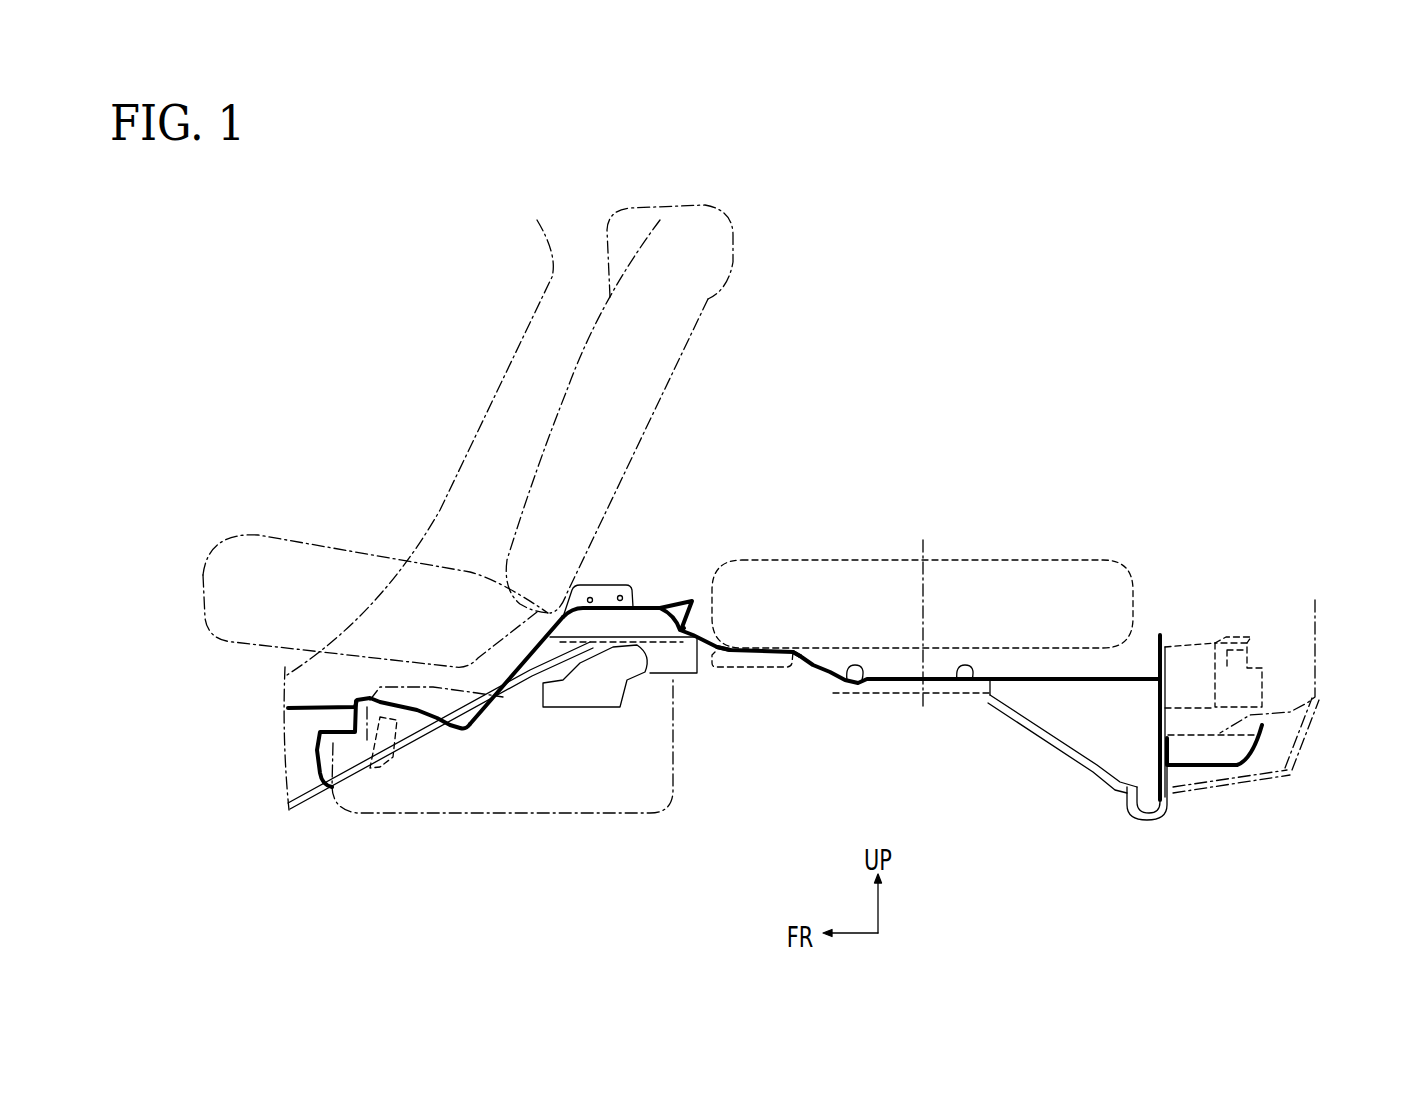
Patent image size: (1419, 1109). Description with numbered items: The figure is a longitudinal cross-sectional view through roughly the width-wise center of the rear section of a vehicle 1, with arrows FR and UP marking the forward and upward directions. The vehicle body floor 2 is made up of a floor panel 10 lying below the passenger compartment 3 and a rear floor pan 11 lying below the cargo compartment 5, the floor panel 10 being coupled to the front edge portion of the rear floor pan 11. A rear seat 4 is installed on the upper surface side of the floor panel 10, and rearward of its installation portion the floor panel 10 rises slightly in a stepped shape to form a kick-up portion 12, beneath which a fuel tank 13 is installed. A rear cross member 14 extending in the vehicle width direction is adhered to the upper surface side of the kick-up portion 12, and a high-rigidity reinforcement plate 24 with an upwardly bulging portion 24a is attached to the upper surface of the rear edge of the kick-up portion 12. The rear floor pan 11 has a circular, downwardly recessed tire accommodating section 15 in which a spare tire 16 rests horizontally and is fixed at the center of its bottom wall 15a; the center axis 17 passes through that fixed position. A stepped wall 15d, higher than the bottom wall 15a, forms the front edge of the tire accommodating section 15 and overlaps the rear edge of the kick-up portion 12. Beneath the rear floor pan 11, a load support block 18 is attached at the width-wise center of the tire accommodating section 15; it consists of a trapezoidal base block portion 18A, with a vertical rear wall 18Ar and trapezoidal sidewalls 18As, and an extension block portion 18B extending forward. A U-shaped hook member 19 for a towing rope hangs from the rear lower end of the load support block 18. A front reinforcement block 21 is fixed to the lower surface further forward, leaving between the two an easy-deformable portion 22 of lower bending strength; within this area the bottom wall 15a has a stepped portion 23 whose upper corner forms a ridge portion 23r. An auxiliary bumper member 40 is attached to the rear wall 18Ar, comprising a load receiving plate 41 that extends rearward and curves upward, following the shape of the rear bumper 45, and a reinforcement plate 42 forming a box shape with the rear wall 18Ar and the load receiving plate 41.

The vehicle 1 is at (999, 178).
The vehicle body floor 2 is at (286, 738).
The passenger compartment 3 is at (375, 483).
The rear seat 4 is at (510, 440).
The cargo compartment 5 is at (1026, 341).
The floor panel 10 is at (440, 783).
The rear floor pan 11 is at (991, 798).
The kick-up portion 12 is at (636, 590).
The fuel tank 13 is at (502, 808).
The rear cross member 14 is at (613, 528).
The tire accommodating section 15 is at (980, 750).
The bottom wall 15a is at (957, 753).
The stepped wall 15d is at (781, 559).
The spare tire 16 is at (940, 557).
The center axis 17 is at (941, 589).
The load support block 18 is at (1047, 705).
The base block portion 18A is at (1076, 742).
The sidewalls 18As is at (1098, 584).
The rear wall 18Ar is at (1213, 637).
The extension block portion 18B is at (911, 732).
The hook member 19 is at (1172, 844).
The front reinforcement block 21 is at (605, 760).
The easy-deformable portion 22 is at (762, 761).
The stepped portion 23 is at (805, 548).
The ridge portion 23r is at (818, 567).
The reinforcement plate 24 is at (694, 528).
The bulging portion 24a is at (722, 552).
The auxiliary bumper member 40 is at (1234, 811).
The load receiving plate 41 is at (1269, 799).
The reinforcement plate 42 is at (1293, 669).
The rear bumper 45 is at (1337, 737).